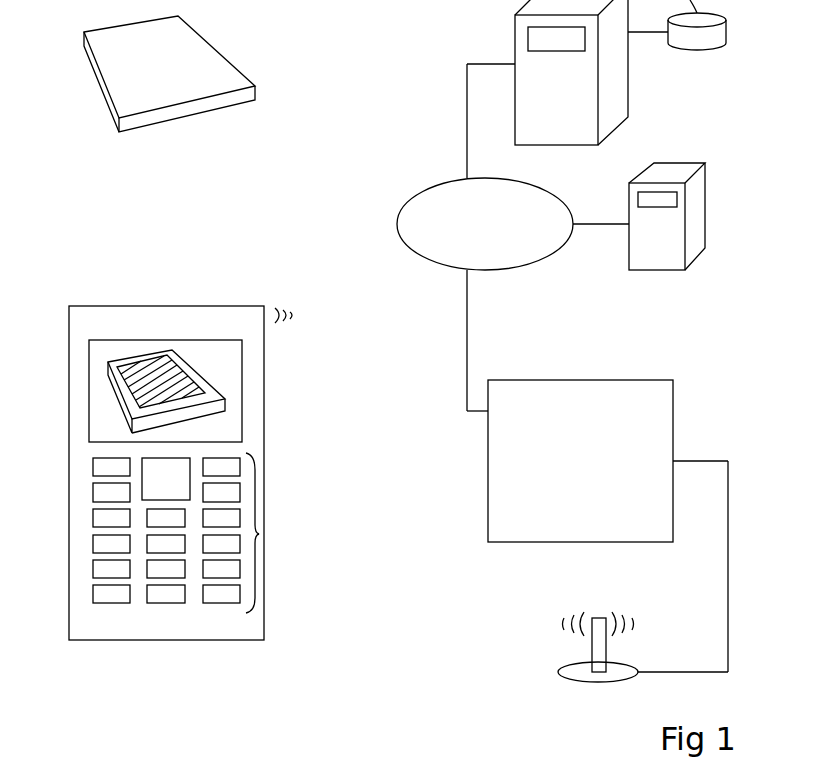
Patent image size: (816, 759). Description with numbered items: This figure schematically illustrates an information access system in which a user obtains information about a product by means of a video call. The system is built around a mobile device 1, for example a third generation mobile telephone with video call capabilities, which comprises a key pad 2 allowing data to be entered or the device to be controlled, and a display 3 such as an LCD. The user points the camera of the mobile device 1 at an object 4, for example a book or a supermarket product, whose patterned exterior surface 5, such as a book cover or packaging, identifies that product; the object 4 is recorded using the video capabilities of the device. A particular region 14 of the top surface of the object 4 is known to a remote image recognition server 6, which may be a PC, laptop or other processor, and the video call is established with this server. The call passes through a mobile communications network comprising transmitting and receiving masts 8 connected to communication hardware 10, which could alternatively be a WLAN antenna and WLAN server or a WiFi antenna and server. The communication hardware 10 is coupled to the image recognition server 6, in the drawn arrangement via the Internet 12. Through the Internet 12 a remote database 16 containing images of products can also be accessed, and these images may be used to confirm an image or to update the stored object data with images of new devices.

The mobile device 1 is at (167, 473).
The key pad 2 is at (259, 534).
The display 3 is at (89, 423).
The object 4 is at (166, 224).
The patterned exterior surface 5 is at (122, 73).
The image recognition server 6 is at (620, 100).
The transmitting and receiving mast 8 is at (556, 675).
The communication hardware 10 is at (488, 505).
The Internet 12 is at (439, 196).
The region of the top surface 14 is at (138, 396).
The remote database 16 is at (656, 260).